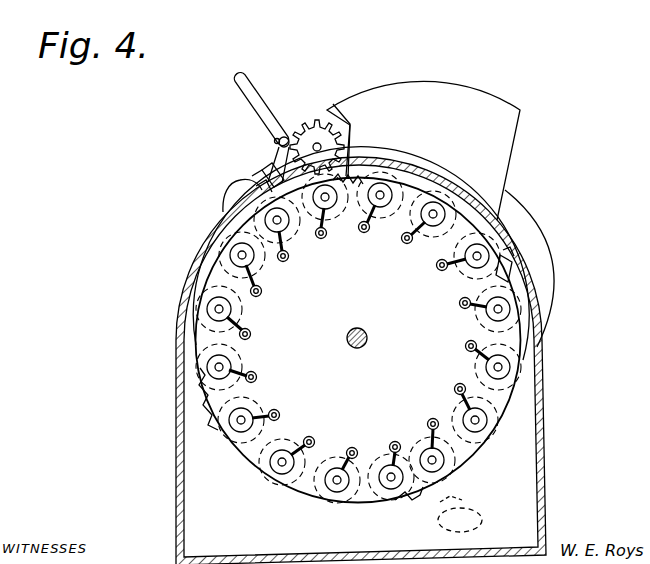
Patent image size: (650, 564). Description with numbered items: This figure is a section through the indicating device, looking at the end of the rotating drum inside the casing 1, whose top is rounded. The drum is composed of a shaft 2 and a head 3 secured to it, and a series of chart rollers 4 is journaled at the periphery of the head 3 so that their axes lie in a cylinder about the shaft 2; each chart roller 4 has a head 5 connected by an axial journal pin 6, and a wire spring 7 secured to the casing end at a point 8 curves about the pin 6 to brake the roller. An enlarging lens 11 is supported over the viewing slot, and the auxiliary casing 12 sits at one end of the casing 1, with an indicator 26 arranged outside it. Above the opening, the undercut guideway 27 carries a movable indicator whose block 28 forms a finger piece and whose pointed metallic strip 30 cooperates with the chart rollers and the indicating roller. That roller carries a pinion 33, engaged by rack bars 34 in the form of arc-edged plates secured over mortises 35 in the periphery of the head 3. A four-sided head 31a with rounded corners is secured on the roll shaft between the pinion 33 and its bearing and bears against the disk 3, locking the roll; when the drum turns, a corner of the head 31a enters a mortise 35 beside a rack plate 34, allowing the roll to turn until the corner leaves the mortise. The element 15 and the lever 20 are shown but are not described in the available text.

The casing 1 is at (545, 433).
The shaft 2 is at (370, 338).
The head 3 is at (358, 340).
The chart roller 4 is at (392, 177).
The head 5 is at (470, 256).
The axial journal pin 6 is at (492, 309).
The spring 7 is at (416, 231).
The spring securing point 8 is at (366, 231).
The enlarging lens 11 is at (226, 190).
The auxiliary casing 12 is at (497, 110).
The curved guide 15 is at (553, 268).
The operating lever 20 is at (250, 90).
The indicator 26 is at (273, 142).
The undercut guideway 27 is at (266, 171).
The block 28 is at (255, 174).
The metallic strip 30 is at (291, 130).
The head 31a is at (338, 112).
The pinion 33 is at (347, 137).
The rack bar 34 is at (492, 262).
The mortise 35 is at (500, 275).